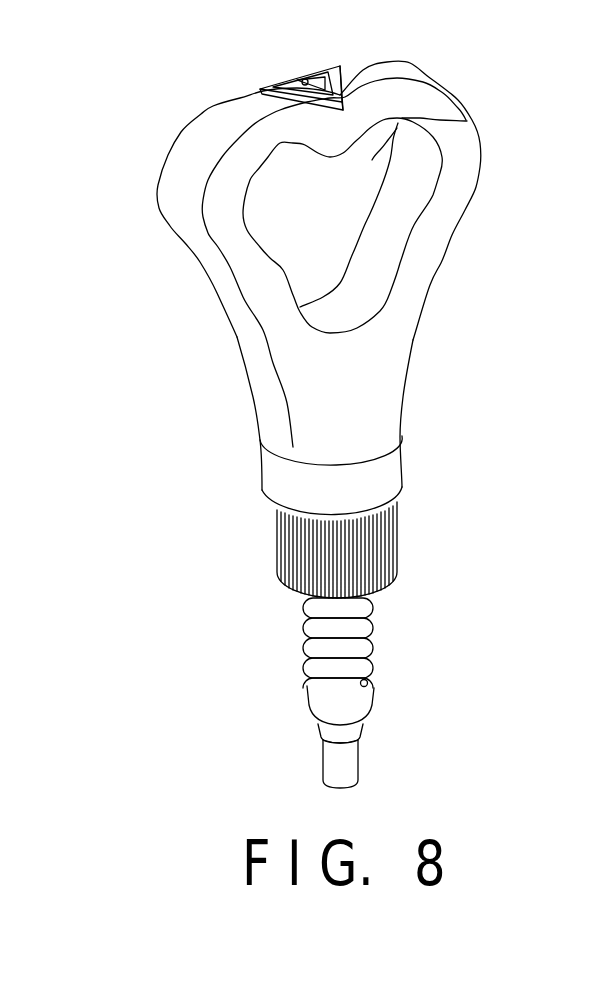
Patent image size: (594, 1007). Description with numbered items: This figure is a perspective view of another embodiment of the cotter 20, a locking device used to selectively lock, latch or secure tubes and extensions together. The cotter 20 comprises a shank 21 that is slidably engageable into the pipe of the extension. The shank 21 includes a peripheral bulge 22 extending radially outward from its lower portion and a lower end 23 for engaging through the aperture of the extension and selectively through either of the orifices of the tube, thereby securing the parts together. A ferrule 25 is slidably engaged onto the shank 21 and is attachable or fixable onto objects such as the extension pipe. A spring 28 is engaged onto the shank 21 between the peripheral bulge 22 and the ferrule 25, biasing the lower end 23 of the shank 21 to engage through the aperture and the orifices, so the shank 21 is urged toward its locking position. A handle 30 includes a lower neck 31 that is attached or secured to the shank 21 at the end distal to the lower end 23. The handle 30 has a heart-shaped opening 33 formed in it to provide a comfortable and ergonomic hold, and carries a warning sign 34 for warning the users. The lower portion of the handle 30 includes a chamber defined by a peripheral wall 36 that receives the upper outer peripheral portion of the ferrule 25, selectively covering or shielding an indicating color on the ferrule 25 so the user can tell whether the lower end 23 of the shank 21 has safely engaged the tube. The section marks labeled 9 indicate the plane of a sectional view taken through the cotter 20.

The cotter 20 is at (196, 116).
The handle 30 is at (430, 285).
The lower neck 31 is at (393, 403).
The heart-shaped opening 33 is at (467, 121).
The warning sign 34 is at (297, 80).
The peripheral wall 36 is at (393, 460).
The ferrule 25 is at (398, 528).
The spring 28 is at (378, 607).
The shank 21 is at (372, 655).
The peripheral bulge 22 is at (368, 683).
The lower end 23 is at (348, 774).
The section line 9- 9 is at (302, 15).